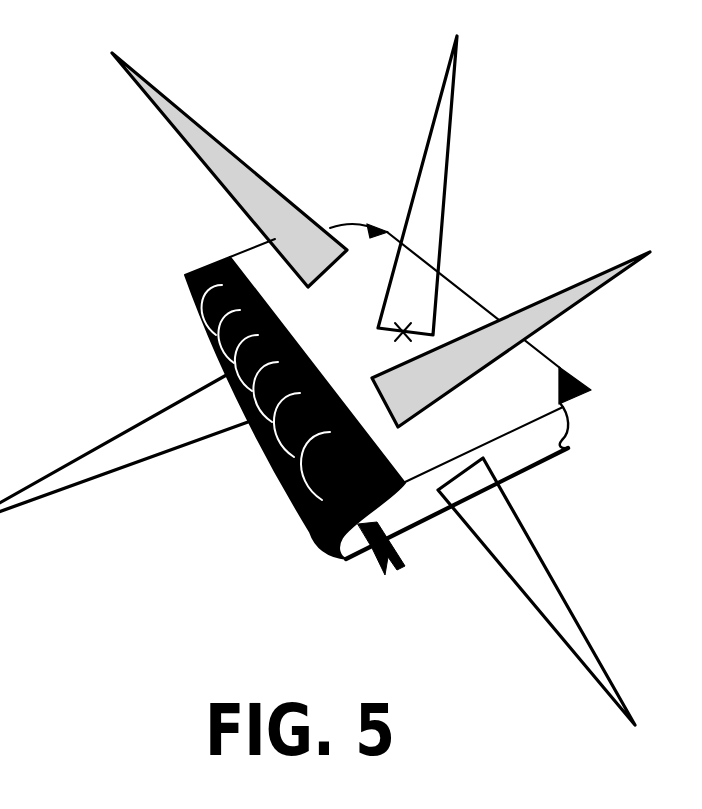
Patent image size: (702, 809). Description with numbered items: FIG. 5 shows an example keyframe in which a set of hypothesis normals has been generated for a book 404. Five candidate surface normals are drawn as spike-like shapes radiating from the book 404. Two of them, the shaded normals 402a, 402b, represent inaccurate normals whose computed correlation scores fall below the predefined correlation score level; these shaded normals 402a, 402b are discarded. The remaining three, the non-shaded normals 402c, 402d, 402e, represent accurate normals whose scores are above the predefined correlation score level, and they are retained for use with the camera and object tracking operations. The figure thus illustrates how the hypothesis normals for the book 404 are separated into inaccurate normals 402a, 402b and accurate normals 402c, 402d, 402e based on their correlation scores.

The hypothesis normal 402a is at (243, 177).
The hypothesis normal 402b is at (577, 290).
The hypothesis normal 402c is at (448, 97).
The hypothesis normal 402d is at (525, 552).
The hypothesis normal 402e is at (140, 442).
The book 404 is at (460, 305).